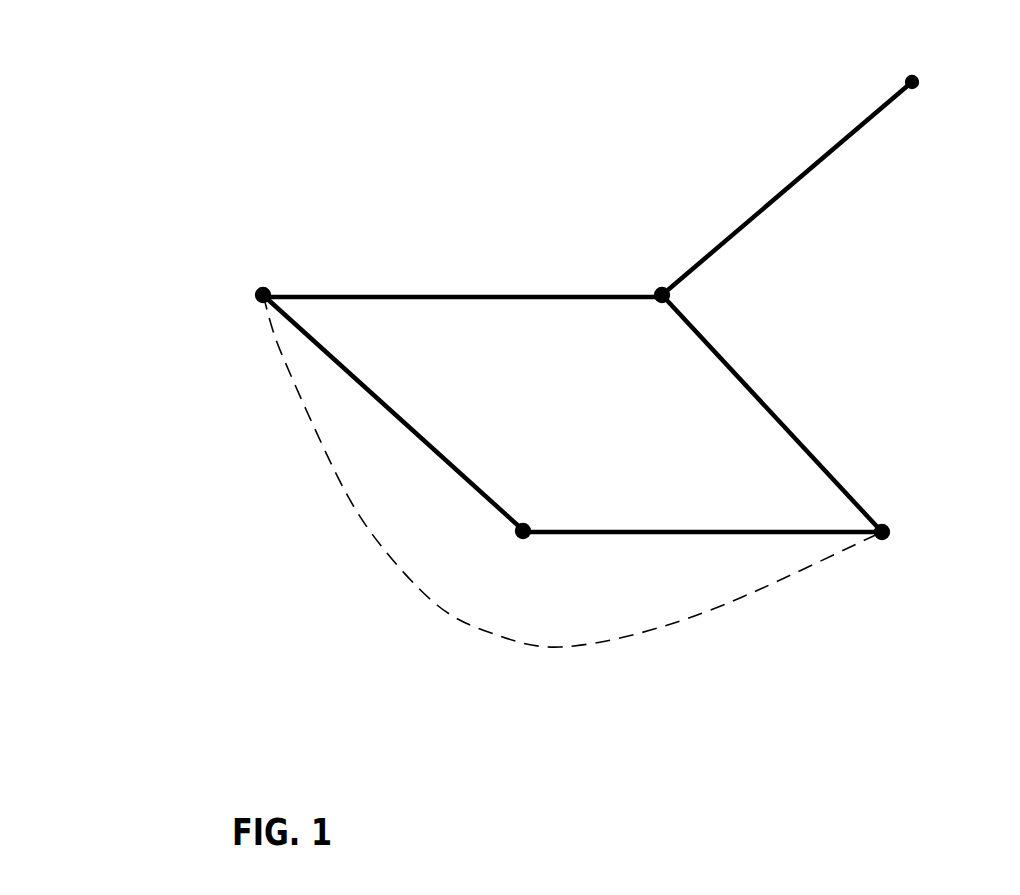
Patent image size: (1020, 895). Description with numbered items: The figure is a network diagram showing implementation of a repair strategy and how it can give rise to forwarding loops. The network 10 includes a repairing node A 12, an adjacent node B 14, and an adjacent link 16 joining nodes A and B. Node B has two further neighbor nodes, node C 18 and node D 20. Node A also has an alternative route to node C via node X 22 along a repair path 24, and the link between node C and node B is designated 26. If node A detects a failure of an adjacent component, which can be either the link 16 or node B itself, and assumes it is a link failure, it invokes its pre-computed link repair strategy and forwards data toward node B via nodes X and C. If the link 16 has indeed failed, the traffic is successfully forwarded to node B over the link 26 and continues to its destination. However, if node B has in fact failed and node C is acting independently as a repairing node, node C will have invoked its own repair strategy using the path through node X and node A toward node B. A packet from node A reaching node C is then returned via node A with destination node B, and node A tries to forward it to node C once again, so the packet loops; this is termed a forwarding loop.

The network 10 is at (148, 196).
The repairing node A 12 is at (265, 290).
The adjacent node B 14 is at (665, 288).
The adjacent link 16 is at (478, 295).
The node C 18 is at (892, 526).
The node D 20 is at (905, 86).
The node X 22 is at (528, 540).
The repair path 24 is at (377, 543).
The link between node C and node B 26 is at (785, 418).